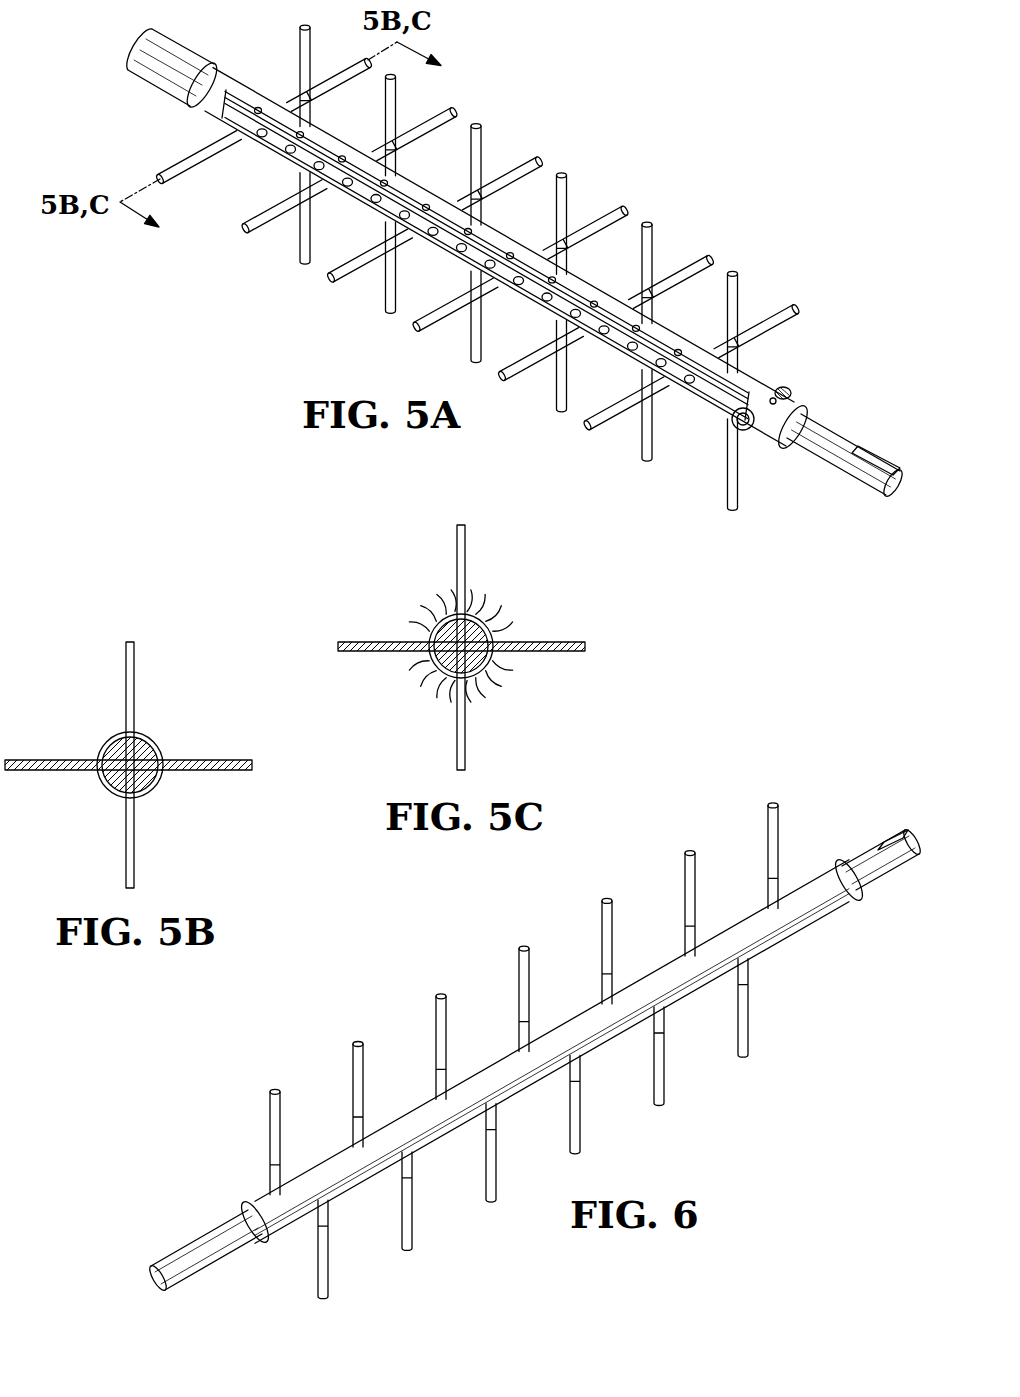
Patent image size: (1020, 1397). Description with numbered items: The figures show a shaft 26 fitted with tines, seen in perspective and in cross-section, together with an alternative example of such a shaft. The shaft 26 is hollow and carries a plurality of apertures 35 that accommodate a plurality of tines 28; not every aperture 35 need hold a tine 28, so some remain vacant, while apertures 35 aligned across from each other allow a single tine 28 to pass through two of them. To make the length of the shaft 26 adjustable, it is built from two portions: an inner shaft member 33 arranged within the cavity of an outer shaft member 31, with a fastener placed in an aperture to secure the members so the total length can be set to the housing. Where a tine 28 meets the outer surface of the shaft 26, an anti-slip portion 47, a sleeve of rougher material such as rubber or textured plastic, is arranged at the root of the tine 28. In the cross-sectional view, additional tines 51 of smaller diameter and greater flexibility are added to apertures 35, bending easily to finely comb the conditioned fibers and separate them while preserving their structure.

In FIG. 5A, the shaft 26 is at (762, 379).
In FIG. 5B, the shaft 26 is at (152, 790).
In FIG. 5C, the shaft 26 is at (426, 660).
In FIG. 6, the shaft 26 is at (790, 942).
In FIG. 5A, the tine 28 is at (778, 312).
In FIG. 5B, the tine 28 is at (124, 660).
In FIG. 5C, the tine 28 is at (456, 542).
In FIG. 6, the tine 28 is at (518, 974).
In FIG. 5A, the outer shaft member 31 is at (718, 370).
In FIG. 5A, the inner shaft member 33 is at (835, 462).
In FIG. 5A, the aperture 35 is at (254, 134).
In FIG. 5B, the aperture 35 is at (162, 757).
In FIG. 5A, the anti-slip portion 47 is at (487, 213).
In FIG. 5C, the tine 51 is at (476, 590).